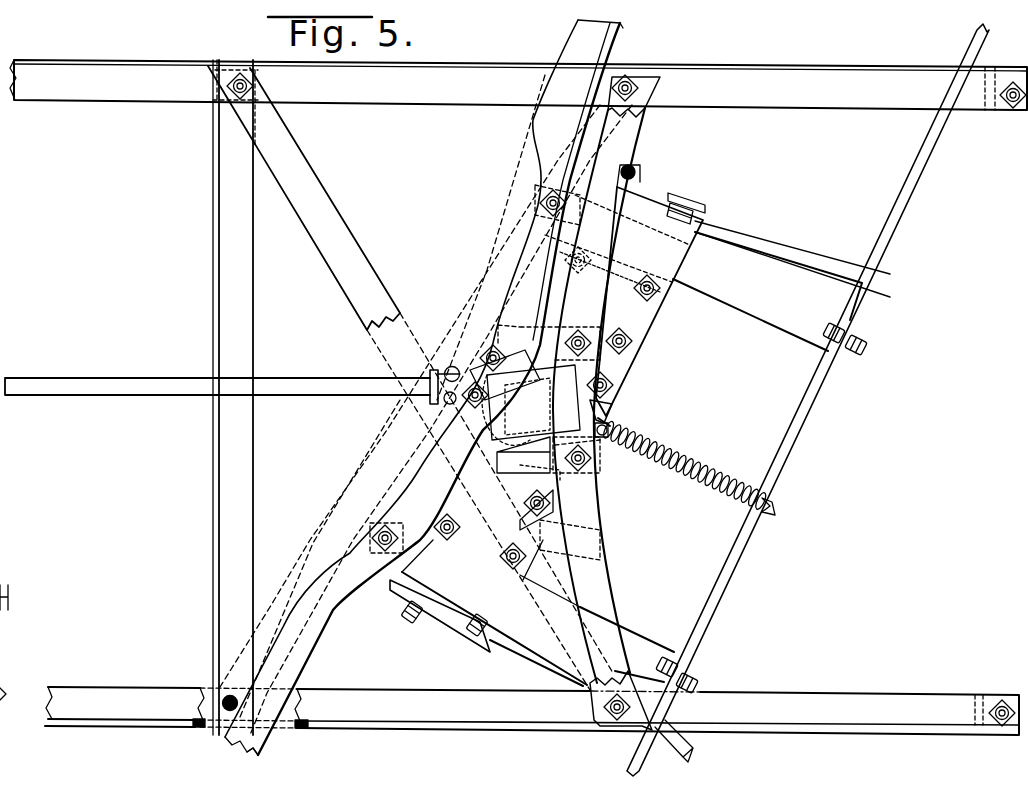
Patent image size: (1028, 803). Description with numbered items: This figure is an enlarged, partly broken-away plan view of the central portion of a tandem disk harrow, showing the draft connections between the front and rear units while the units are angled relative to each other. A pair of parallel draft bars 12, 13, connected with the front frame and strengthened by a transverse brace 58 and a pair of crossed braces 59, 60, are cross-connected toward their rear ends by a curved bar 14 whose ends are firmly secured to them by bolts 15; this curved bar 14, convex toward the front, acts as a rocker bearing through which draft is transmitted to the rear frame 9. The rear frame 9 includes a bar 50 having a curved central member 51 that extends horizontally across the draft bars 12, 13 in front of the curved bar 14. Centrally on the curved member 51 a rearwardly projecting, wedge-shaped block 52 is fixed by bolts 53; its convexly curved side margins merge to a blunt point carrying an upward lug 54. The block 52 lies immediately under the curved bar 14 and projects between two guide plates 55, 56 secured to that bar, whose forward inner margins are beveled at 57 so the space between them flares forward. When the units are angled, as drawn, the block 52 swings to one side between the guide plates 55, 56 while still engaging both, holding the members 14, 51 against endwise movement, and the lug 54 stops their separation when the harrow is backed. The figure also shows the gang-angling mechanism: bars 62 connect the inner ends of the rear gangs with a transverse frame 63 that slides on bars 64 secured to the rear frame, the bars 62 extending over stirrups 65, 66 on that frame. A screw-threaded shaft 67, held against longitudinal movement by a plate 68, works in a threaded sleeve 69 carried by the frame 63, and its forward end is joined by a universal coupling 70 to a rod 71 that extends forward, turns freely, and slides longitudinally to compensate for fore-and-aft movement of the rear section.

The rear frame 9 is at (258, 757).
The draft bar 12 is at (484, 52).
The draft bar 13 is at (492, 728).
The curved bar 14 is at (616, 570).
The bolts 15 is at (632, 80).
The bar 50 is at (574, 32).
The curved central member 51 is at (525, 300).
The block 52 is at (520, 425).
The bolts 53 is at (480, 382).
The lug 54 is at (608, 424).
The guide plate 55 is at (560, 330).
The guide plate 56 is at (528, 476).
The bevel 57 is at (500, 368).
The transverse brace 58 is at (213, 424).
The crossed brace 59 is at (380, 274).
The crossed brace 60 is at (345, 500).
The bars 62 is at (898, 292).
The transverse frame 63 is at (655, 322).
The bars 64 is at (765, 322).
The stirrup 65 is at (707, 210).
The stirrup 66 is at (449, 627).
The screw-threaded shaft 67 is at (732, 482).
The plate 68 is at (626, 378).
The threaded sleeve 69 is at (608, 423).
The universal coupling 70 is at (452, 367).
The rod 71 is at (345, 378).